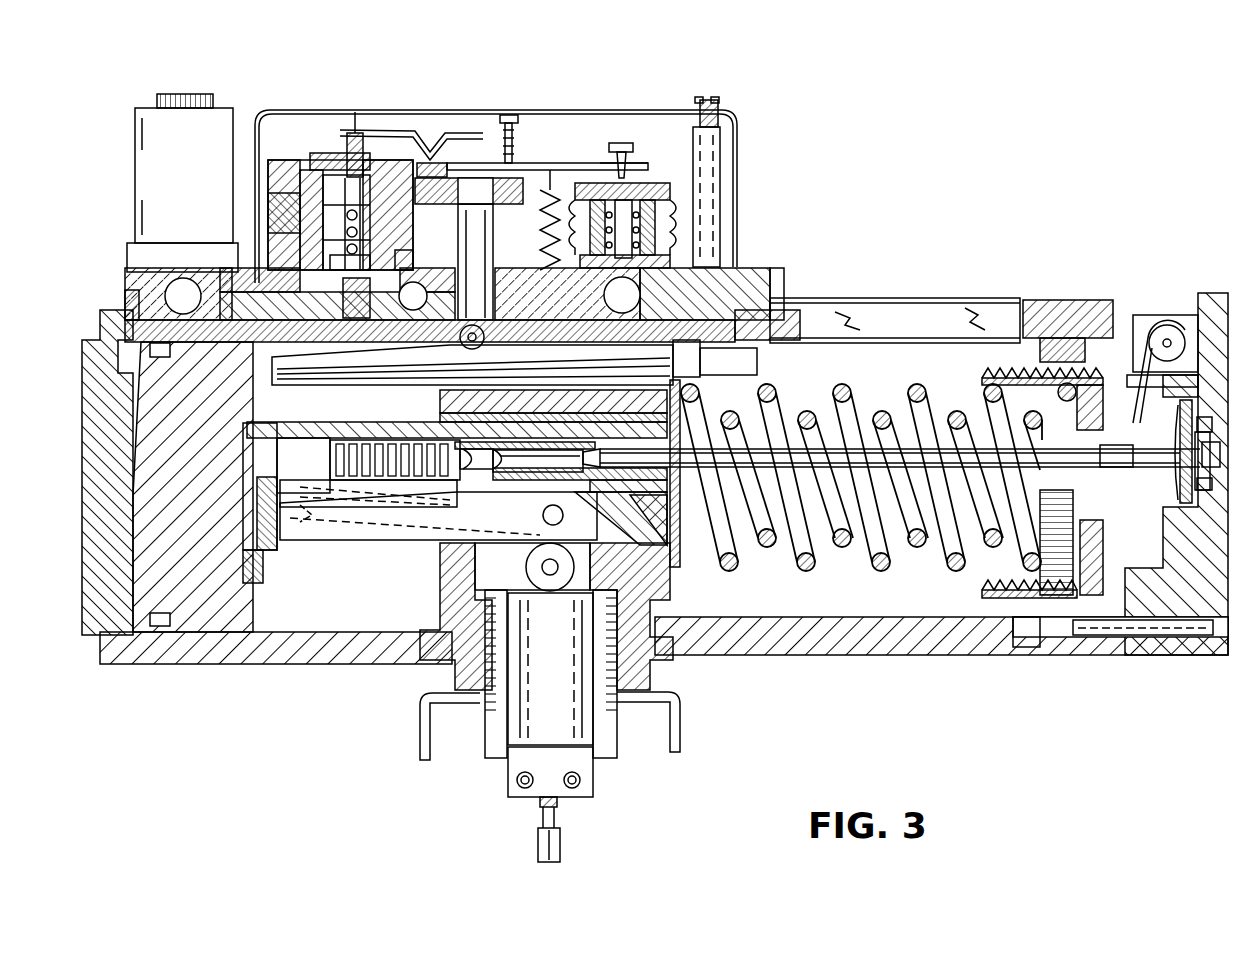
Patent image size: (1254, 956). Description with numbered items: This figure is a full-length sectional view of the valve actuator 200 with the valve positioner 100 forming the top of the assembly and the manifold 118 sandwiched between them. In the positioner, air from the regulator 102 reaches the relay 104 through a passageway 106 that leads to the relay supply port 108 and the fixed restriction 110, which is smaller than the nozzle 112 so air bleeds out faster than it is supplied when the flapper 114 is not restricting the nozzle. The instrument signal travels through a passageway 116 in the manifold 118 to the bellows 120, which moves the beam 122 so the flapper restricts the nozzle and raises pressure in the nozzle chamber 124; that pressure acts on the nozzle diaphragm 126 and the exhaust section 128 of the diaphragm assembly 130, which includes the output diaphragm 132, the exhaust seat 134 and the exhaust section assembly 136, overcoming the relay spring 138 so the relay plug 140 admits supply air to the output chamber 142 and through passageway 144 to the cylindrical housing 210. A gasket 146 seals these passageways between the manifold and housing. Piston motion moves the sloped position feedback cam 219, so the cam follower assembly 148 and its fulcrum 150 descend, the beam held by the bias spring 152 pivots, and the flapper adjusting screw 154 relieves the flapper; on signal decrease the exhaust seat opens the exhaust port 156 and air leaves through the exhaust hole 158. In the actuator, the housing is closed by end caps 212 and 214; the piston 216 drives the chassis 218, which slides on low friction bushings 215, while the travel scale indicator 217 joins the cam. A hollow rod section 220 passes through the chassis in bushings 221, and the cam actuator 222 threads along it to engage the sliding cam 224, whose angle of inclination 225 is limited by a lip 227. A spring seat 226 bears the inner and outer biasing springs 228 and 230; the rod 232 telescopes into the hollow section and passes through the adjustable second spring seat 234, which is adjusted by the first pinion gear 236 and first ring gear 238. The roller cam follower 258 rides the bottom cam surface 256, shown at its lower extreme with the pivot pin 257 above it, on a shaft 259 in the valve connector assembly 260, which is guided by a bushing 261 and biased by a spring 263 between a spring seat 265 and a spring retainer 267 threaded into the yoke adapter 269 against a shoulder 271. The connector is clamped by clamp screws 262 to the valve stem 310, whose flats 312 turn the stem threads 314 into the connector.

The valve positioner 100 is at (763, 82).
The regulator 102 is at (152, 115).
The relay 104 is at (287, 84).
The passageway 106 is at (226, 283).
The relay supply port 108 is at (300, 258).
The fixed restriction 110 is at (290, 163).
The nozzle 112 is at (320, 190).
The flapper 114 is at (450, 130).
The passageway 116 is at (722, 313).
The manifold 118 is at (650, 300).
The bellows 120 is at (670, 187).
The beam 122 is at (628, 150).
The nozzle chamber 124 is at (310, 165).
The nozzle diaphragm 126 is at (400, 170).
The exhaust section 128 is at (292, 200).
The diaphragm assembly 130 is at (388, 200).
The output diaphragm 132 is at (302, 215).
The exhaust seat 134 is at (312, 240).
The valve plunger 136 is at (322, 230).
The relay spring 138 is at (406, 228).
The relay plug 140 is at (312, 256).
The output chamber 142 is at (402, 262).
The passageway 144 is at (127, 312).
The gasket 146 is at (776, 290).
The cam follower assembly 148 is at (525, 180).
The fulcrum 150 is at (475, 180).
The bias spring 152 is at (557, 207).
The flapper adjusting screw 154 is at (447, 130).
The exhaust port 156 is at (467, 185).
The exhaust hole 158 is at (412, 130).
The valve actuator 200 is at (892, 212).
The cylindrical housing 210 is at (178, 656).
The first end cap 212 is at (105, 662).
The second end cap 214 is at (1205, 656).
The low friction bushings 215 is at (450, 505).
The piston 216 is at (200, 620).
The travel scale indicator 217 is at (850, 317).
The chassis 218 is at (277, 585).
The position feedback cam 219 is at (302, 385).
The hollow rod section 220 is at (443, 428).
The bushings 221 is at (667, 497).
The cam actuator 222 is at (313, 450).
The sliding cam 224 is at (288, 565).
The angle of inclination 225 is at (330, 545).
The spring seat 226 is at (655, 615).
The lip 227 is at (667, 521).
The inner biasing helical spring 228 is at (942, 395).
The outer biasing helical spring 230 is at (913, 390).
The rod 232 is at (965, 445).
The adjustable second spring seat 234 is at (1110, 600).
The first pinion gear 236 is at (1062, 580).
The first ring gear 238 is at (1010, 500).
The bottom cam surface 256 is at (372, 540).
The pivot pin 257 is at (447, 524).
The roller cam follower 258 is at (440, 545).
The shaft 259 is at (452, 580).
The valve connector assembly 260 is at (594, 778).
The bushing 261 is at (492, 712).
The clamp screws 262 is at (578, 788).
The spring 263 is at (660, 673).
The spring seat 265 is at (603, 572).
The spring retainer 267 is at (618, 730).
The yoke adapter 269 is at (670, 702).
The shoulder 271 is at (487, 703).
The valve stem 310 is at (538, 845).
The flats 312 is at (538, 818).
The stem threads 314 is at (538, 803).